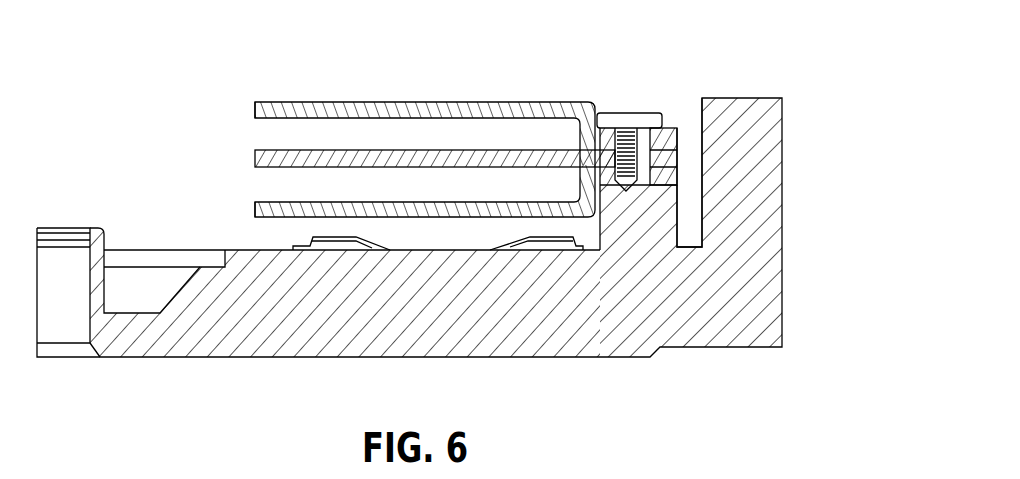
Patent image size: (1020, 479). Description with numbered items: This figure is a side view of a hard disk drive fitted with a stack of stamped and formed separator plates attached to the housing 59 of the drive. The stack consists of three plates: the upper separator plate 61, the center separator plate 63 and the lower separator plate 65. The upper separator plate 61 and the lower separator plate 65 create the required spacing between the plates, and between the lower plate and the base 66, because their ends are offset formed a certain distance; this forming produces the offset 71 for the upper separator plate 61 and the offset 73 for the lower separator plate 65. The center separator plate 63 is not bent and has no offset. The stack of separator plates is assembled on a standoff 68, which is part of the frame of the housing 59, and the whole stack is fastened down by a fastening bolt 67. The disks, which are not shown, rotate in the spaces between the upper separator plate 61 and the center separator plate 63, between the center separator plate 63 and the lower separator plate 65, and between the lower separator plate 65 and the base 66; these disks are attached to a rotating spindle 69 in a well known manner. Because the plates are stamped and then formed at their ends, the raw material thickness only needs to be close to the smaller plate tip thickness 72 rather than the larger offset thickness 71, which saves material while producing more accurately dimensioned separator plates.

The housing 59 is at (782, 158).
The upper separator plate 61 is at (544, 102).
The center separator plate 63 is at (255, 150).
The lower separator plate 65 is at (255, 202).
The base 66 is at (250, 250).
The fastening bolt 67 is at (640, 113).
The standoff 68 is at (681, 213).
The rotating spindle 69 is at (80, 228).
The offset 71 is at (596, 108).
The plate tip thickness 72 is at (255, 102).
The offset 73 is at (600, 195).